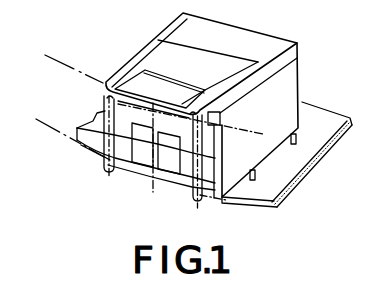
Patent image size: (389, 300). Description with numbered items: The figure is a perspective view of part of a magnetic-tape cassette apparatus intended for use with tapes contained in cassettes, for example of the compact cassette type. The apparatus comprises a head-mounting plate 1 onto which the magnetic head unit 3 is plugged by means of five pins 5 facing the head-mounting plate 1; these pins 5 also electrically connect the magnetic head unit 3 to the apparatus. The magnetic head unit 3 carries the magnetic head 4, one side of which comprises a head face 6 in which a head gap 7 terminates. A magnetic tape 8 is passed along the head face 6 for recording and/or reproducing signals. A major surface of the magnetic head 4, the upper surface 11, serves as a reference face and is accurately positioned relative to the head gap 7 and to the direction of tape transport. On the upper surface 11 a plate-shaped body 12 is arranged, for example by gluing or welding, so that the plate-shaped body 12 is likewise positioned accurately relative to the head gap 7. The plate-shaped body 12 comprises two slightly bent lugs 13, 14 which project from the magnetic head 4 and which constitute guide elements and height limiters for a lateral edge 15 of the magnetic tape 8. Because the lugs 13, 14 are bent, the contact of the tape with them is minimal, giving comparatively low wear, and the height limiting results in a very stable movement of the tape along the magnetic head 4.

The head-mounting plate 1 is at (310, 152).
The magnetic head unit 3 is at (310, 73).
The magnetic head 4 is at (243, 36).
The pins 5 is at (293, 144).
The head face 6 is at (177, 171).
The head gap 7 is at (150, 171).
The magnetic tape 8 is at (68, 88).
The upper surface 11 is at (190, 27).
The plate-shaped body 12 is at (162, 53).
The lug 13 is at (199, 202).
The lug 14 is at (105, 95).
The lateral edge 15 is at (228, 126).